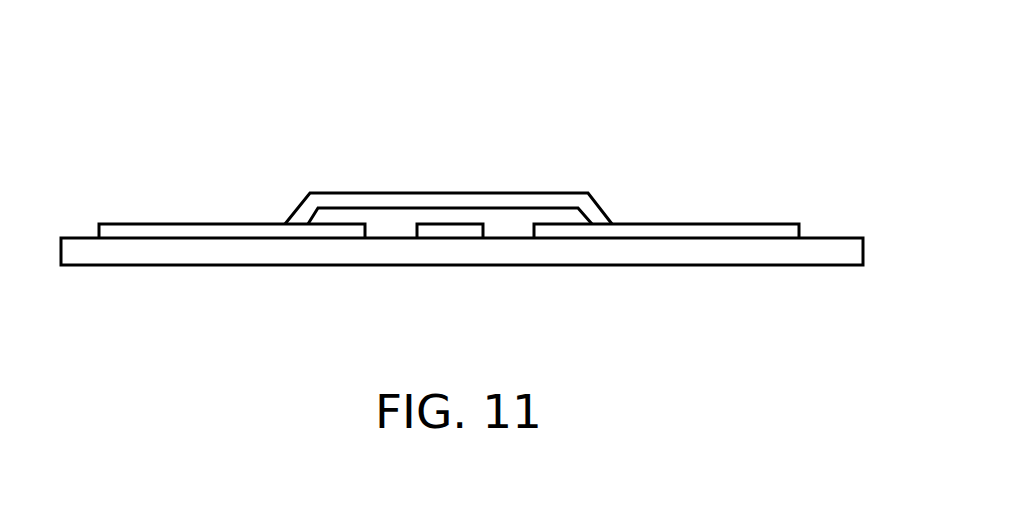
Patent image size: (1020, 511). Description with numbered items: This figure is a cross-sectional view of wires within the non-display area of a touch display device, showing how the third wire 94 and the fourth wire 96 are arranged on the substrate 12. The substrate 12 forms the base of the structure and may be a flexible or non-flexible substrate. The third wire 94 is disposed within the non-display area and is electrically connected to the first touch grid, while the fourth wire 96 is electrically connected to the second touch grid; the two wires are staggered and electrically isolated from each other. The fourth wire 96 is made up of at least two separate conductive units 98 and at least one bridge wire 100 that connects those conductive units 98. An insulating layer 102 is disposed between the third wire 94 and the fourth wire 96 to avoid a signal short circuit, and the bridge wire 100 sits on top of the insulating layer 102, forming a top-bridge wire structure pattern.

The substrate 12 is at (822, 257).
The third wire 94 is at (460, 230).
The fourth wire 96 is at (833, 35).
The conductive units 98 is at (133, 232).
The bridge wire 100 is at (509, 202).
The insulating layer 102 is at (390, 230).